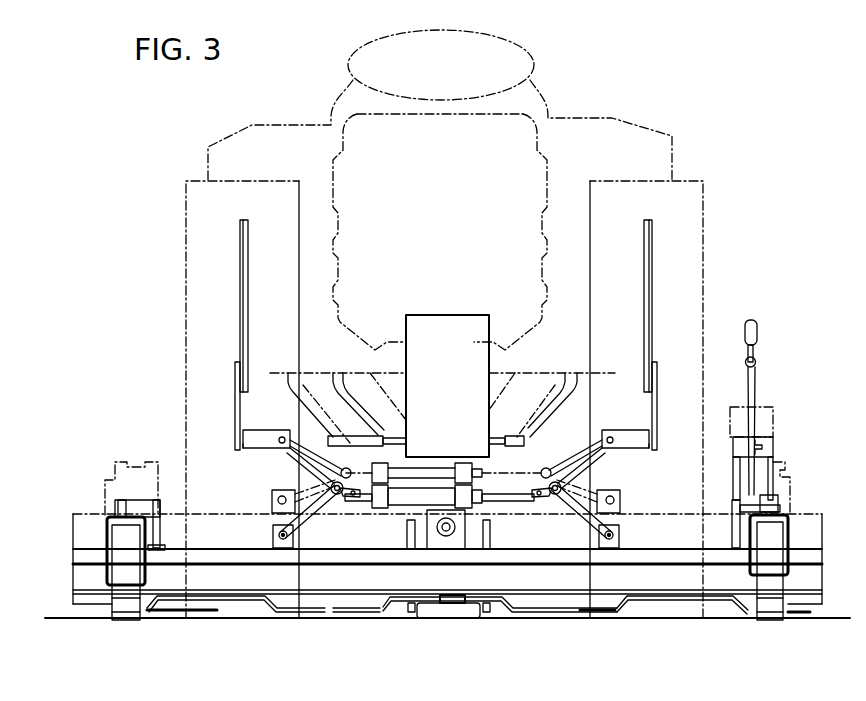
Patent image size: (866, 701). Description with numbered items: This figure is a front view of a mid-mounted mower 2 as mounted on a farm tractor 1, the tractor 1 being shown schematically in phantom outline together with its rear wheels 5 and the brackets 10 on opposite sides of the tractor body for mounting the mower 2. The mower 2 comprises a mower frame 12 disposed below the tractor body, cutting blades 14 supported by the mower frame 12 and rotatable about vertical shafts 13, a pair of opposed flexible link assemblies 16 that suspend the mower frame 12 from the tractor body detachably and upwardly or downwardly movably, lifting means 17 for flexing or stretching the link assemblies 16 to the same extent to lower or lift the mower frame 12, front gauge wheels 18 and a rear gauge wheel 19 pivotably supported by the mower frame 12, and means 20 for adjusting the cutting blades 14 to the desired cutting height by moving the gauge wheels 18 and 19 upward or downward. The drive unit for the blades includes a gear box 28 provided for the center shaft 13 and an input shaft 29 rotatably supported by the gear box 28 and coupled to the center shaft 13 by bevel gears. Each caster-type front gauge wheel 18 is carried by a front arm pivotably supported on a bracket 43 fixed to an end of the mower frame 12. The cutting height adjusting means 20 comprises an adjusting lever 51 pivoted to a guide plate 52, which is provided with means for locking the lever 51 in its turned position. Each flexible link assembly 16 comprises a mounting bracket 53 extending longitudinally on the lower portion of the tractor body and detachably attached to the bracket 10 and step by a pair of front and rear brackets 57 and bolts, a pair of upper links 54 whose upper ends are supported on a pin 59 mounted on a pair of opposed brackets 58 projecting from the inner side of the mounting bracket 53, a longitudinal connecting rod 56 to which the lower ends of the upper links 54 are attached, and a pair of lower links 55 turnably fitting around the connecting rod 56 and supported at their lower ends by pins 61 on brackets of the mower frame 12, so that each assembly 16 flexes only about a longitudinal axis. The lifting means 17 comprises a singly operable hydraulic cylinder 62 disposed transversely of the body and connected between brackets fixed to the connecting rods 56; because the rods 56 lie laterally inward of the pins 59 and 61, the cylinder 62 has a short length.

The farm tractor 1 is at (560, 110).
The mid-mounted mower 2 is at (300, 618).
The rear wheels 5 is at (186, 287).
The brackets 10 is at (240, 302).
The mower frame 12 is at (372, 585).
The vertical shafts 13 is at (482, 376).
The cutting blades 14 is at (163, 609).
The flexible link assemblies 16 is at (293, 482).
The lifting means 17 is at (413, 486).
The front gauge wheels 18 is at (120, 545).
The rear gauge wheel 19 is at (466, 618).
The cutting height adjusting means 20 is at (762, 400).
The gear box 28 is at (427, 540).
The input shaft 29 is at (466, 528).
The bracket 43 is at (160, 532).
The adjusting lever 51 is at (757, 386).
The guide plate 52 is at (770, 447).
The mounting bracket 53 is at (243, 436).
The upper links 54 is at (309, 452).
The lower links 55 is at (313, 508).
The connecting rod 56 is at (348, 473).
The front and rear brackets 57 is at (236, 371).
The opposed brackets 58 is at (263, 448).
The pin 59 is at (282, 436).
The pin 61 is at (276, 535).
The hydraulic cylinder 62 is at (440, 492).